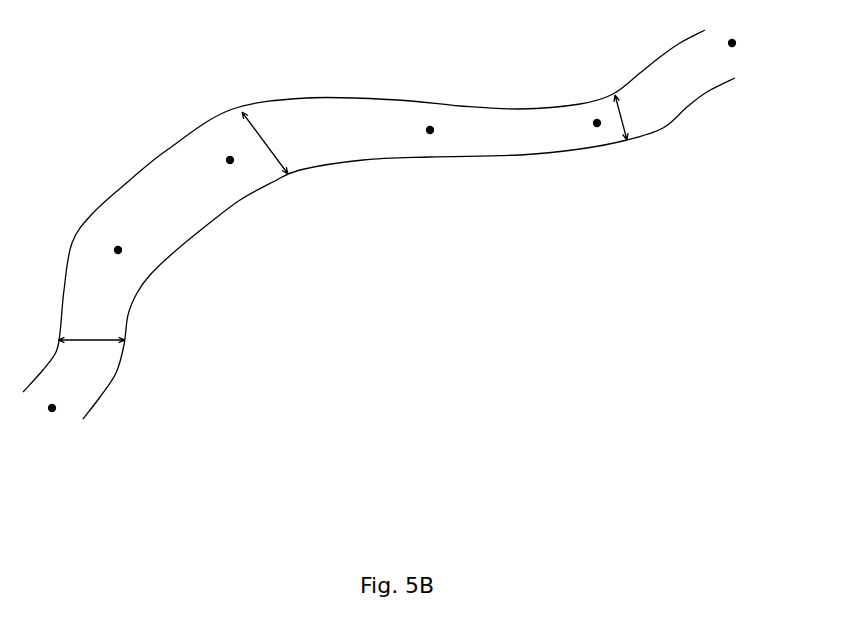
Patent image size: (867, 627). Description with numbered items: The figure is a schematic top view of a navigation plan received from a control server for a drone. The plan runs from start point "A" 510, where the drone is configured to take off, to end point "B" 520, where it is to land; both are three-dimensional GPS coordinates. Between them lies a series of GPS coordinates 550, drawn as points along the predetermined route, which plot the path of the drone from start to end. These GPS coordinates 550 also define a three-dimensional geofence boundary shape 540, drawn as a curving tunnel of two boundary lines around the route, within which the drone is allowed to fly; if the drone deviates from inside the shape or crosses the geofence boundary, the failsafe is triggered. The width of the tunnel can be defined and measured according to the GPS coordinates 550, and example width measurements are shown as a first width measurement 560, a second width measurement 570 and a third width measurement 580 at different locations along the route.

The start point "A" 510 is at (55, 415).
The end point "B" 520 is at (745, 57).
The geofence boundary 3D shape 540 is at (345, 93).
The GPS coordinates 550 is at (118, 250).
The width measurement d1 560 is at (107, 343).
The width measurement d2 570 is at (627, 141).
The width measurement d3 580 is at (273, 181).